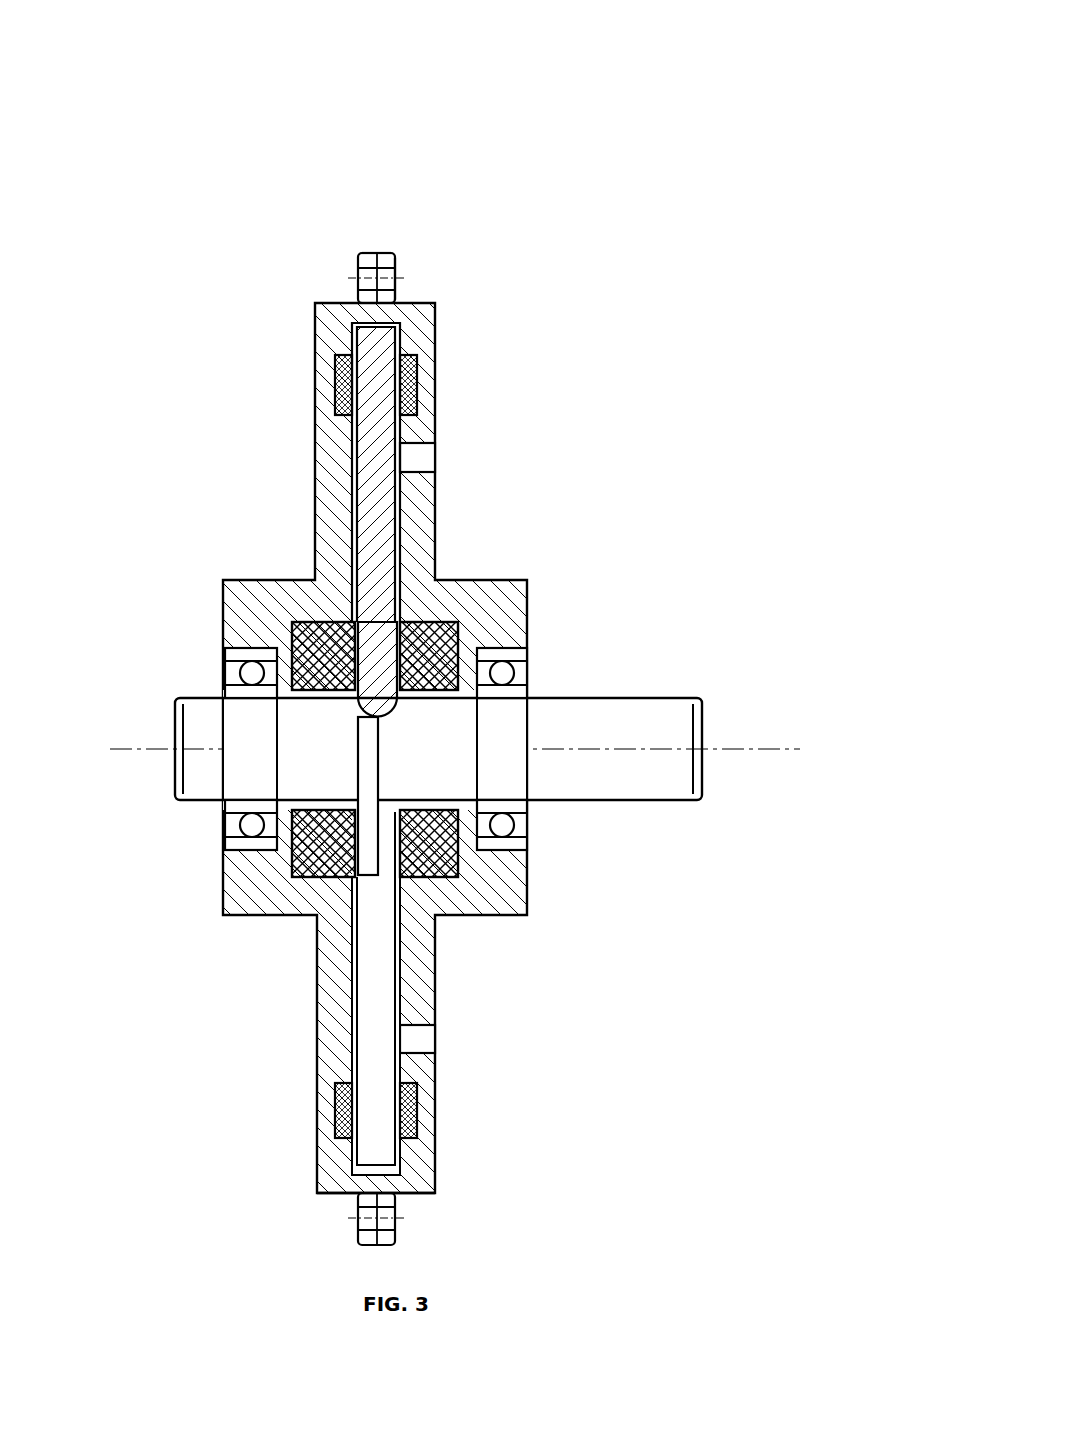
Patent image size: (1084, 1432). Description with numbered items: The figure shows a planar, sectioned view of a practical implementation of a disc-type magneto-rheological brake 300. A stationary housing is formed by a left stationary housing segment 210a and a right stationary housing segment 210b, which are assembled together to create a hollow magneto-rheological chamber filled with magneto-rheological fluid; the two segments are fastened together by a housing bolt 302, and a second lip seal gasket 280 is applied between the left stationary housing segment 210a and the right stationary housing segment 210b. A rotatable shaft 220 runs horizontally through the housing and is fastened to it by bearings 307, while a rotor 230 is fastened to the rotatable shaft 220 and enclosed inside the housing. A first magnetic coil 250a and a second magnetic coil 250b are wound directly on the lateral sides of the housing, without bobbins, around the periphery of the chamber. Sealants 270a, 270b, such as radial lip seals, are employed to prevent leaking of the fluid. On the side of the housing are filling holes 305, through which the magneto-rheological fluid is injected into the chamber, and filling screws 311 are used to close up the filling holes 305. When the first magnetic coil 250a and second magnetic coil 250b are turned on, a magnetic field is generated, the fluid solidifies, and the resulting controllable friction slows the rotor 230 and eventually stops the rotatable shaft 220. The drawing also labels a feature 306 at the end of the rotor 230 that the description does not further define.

The disc-type magneto-rheological brake 300 is at (325, 238).
The left stationary housing segment 210a is at (569, 1251).
The right stationary housing segment 210b is at (523, 749).
The rotatable shaft 220 is at (492, 756).
The rotor 230 is at (581, 372).
The first magnetic coil 250a is at (202, 745).
The second magnetic coil 250b is at (611, 705).
The sealant 270a is at (204, 763).
The sealant 270b is at (611, 831).
The second lip seal gasket 280 is at (586, 127).
The housing bolt 302 is at (602, 178).
The filling hole 305 is at (584, 568).
The rounded tip 306 is at (584, 545).
The bearing 307 is at (517, 666).
The filling screw 311 is at (605, 1094).